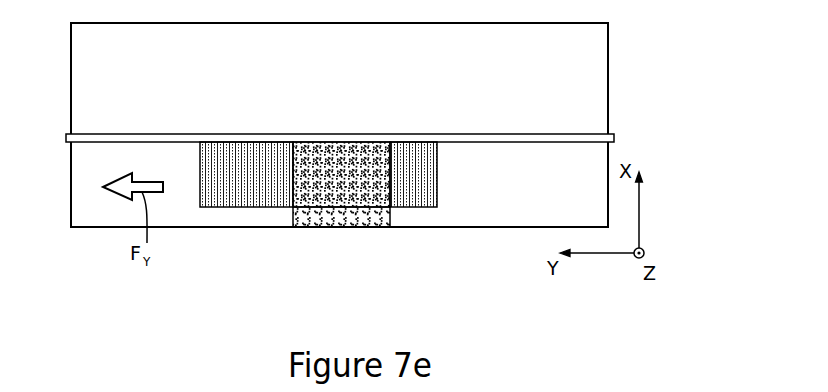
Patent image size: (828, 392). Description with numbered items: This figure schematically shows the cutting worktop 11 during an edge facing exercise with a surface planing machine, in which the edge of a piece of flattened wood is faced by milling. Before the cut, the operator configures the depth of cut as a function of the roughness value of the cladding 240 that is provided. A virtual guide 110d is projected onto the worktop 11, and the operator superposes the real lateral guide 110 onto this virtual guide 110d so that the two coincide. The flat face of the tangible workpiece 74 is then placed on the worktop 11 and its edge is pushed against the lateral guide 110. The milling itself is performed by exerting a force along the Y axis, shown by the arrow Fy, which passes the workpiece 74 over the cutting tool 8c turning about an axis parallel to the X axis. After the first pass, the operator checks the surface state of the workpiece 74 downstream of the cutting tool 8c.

The cutting worktop 11 is at (608, 91).
The real lateral guide 110 is at (475, 142).
The virtual guide 110d is at (530, 142).
The tangible workpiece 74 is at (237, 212).
The cladding 240 is at (422, 160).
The cutting tool 8c is at (360, 220).